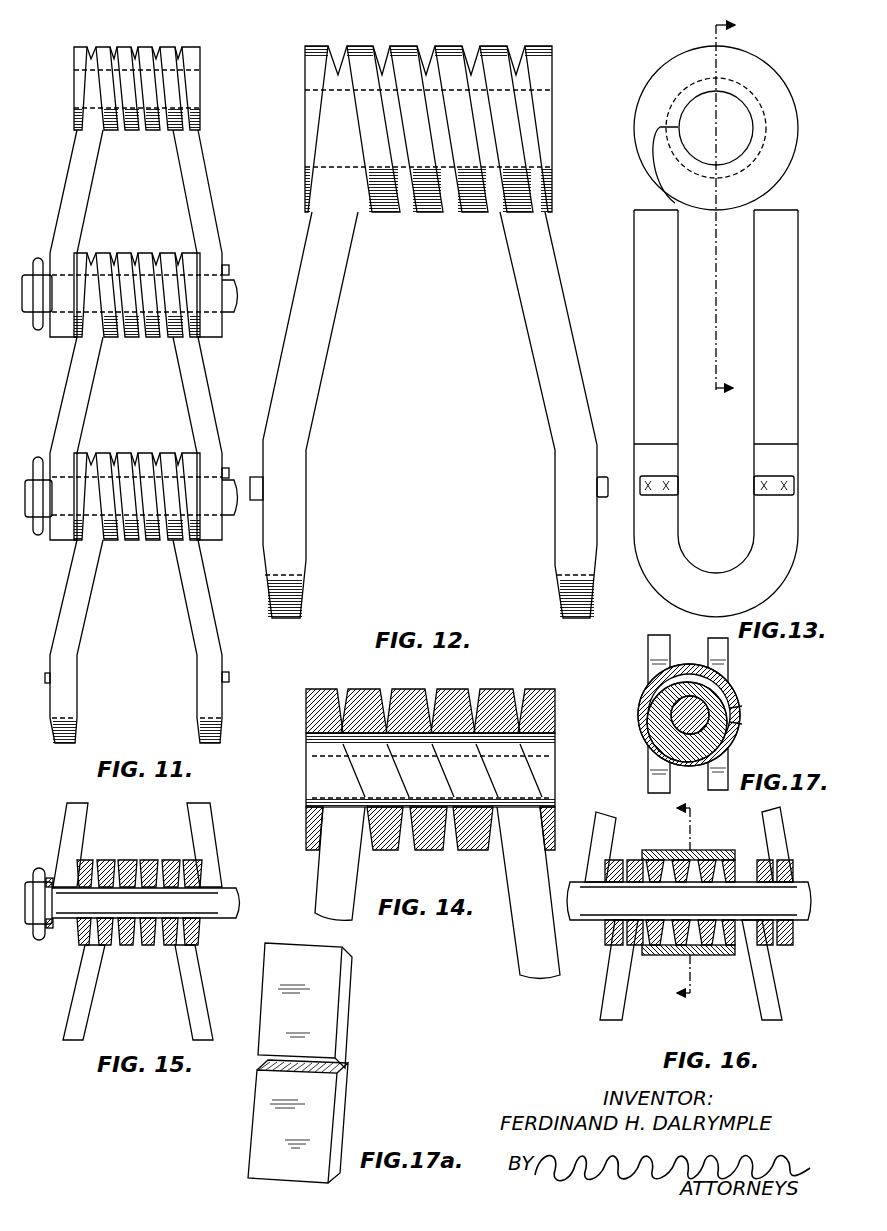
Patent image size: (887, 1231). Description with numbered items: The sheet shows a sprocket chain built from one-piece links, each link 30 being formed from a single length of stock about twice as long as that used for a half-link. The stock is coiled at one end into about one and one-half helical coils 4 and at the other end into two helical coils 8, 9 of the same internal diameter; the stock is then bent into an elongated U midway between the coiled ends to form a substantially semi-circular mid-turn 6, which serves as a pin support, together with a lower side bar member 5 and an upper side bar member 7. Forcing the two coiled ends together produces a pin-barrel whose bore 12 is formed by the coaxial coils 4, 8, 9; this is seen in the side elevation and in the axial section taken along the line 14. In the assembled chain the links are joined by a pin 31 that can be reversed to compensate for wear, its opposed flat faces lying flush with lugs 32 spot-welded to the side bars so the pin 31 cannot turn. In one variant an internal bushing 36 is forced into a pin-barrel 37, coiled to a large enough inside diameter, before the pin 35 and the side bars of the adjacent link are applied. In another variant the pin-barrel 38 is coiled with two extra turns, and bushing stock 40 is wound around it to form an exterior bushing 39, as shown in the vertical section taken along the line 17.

In FIG. 11, the helical coils 4 is at (84, 252).
In FIG. 12, the helical coils 4 is at (312, 50).
In FIG. 13, the helical coils 4 is at (772, 85).
In FIG. 14, the helical coils 4 is at (316, 689).
In FIG. 13, the lower side bar member 5 is at (776, 372).
In FIG. 14, the lower side bar member 5 is at (318, 902).
In FIG. 15, the lower side bar member 5 is at (70, 818).
In FIG. 16, the lower side bar member 5 is at (603, 818).
In FIG. 17, the lower side bar member 5 is at (728, 656).
In FIG. 11, the semi-circular mid-turn 6 is at (62, 538).
In FIG. 12, the semi-circular mid-turn 6 is at (286, 616).
In FIG. 13, the semi-circular mid-turn 6 is at (716, 576).
In FIG. 16, the semi-circular mid-turn 6 is at (596, 946).
In FIG. 11, the upper side bar member 7 is at (72, 200).
In FIG. 12, the upper side bar member 7 is at (340, 272).
In FIG. 13, the upper side bar member 7 is at (656, 372).
In FIG. 17, the upper side bar member 7 is at (648, 652).
In FIG. 11, the helical coil 8 is at (103, 453).
In FIG. 12, the helical coil 8 is at (358, 50).
In FIG. 14, the helical coil 8 is at (362, 689).
In FIG. 11, the helical coil 9 is at (124, 453).
In FIG. 12, the helical coil 9 is at (403, 50).
In FIG. 14, the helical coil 9 is at (409, 689).
In FIG. 11, the bore 12 is at (122, 252).
In FIG. 12, the bore 12 is at (432, 195).
In FIG. 13, the bore 12 is at (738, 106).
In FIG. 14, the bore 12 is at (430, 770).
In FIG. 17, the bore 12 is at (690, 715).
In FIG. 13, the section line 14— 14 is at (742, 215).
In FIG. 16, the section line 17— 17 is at (700, 903).
In FIG. 11, the link 30 is at (132, 394).
In FIG. 12, the link 30 is at (417, 358).
In FIG. 13, the link 30 is at (716, 372).
In FIG. 14, the link 30 is at (427, 873).
In FIG. 15, the link 30 is at (232, 901).
In FIG. 11, the pin 31 is at (238, 292).
In FIG. 11, the lugs 32 is at (229, 268).
In FIG. 12, the lugs 32 is at (605, 498).
In FIG. 13, the lugs 32 is at (768, 498).
In FIG. 15, the pin 35 is at (243, 905).
In FIG. 16, the pin 35 is at (689, 901).
In FIG. 15, the internal bushing 36 is at (148, 860).
In FIG. 15, the pin-barrel 37 is at (106, 860).
In FIG. 16, the pin-barrel 38 is at (724, 860).
In FIG. 17, the pin-barrel 38 is at (741, 728).
In FIG. 16, the exterior bushing 39 is at (660, 850).
In FIG. 17, the exterior bushing 39 is at (640, 702).
In FIG. 17a, the bushing stock 40 is at (327, 1085).